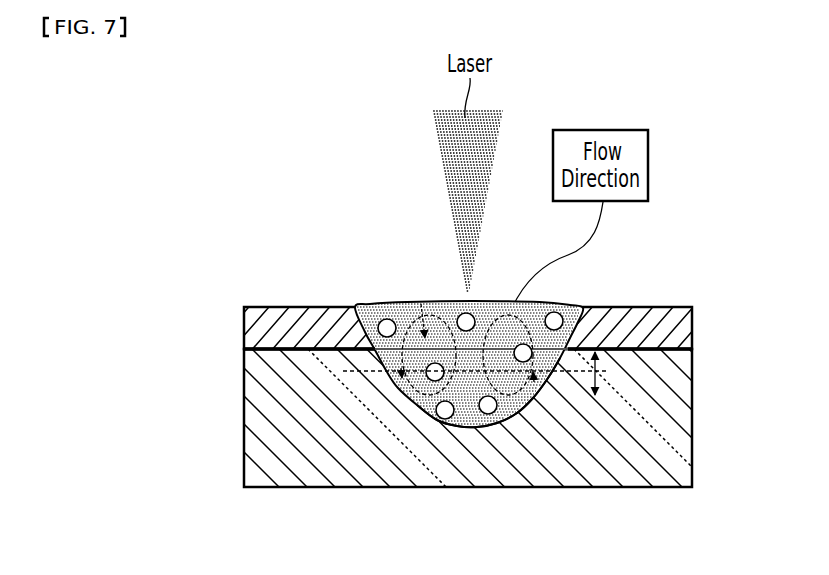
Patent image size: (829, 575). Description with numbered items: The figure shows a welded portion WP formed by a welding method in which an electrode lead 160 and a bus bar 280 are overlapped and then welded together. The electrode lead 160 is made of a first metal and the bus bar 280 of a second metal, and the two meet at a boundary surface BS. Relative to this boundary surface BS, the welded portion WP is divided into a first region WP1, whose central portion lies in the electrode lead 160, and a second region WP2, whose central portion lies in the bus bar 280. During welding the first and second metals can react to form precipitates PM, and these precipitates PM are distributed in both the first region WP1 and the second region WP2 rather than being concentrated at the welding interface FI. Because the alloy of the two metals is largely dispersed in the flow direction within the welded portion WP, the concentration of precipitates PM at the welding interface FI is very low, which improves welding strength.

The electrode lead 160 is at (693, 331).
The bus bar 280 is at (693, 430).
The welded portion WP is at (467, 392).
The precipitates PM is at (365, 307).
The boundary surface BS is at (420, 302).
The welding interface FI is at (520, 412).
The first region WP1 is at (605, 343).
The second region WP2 is at (484, 402).